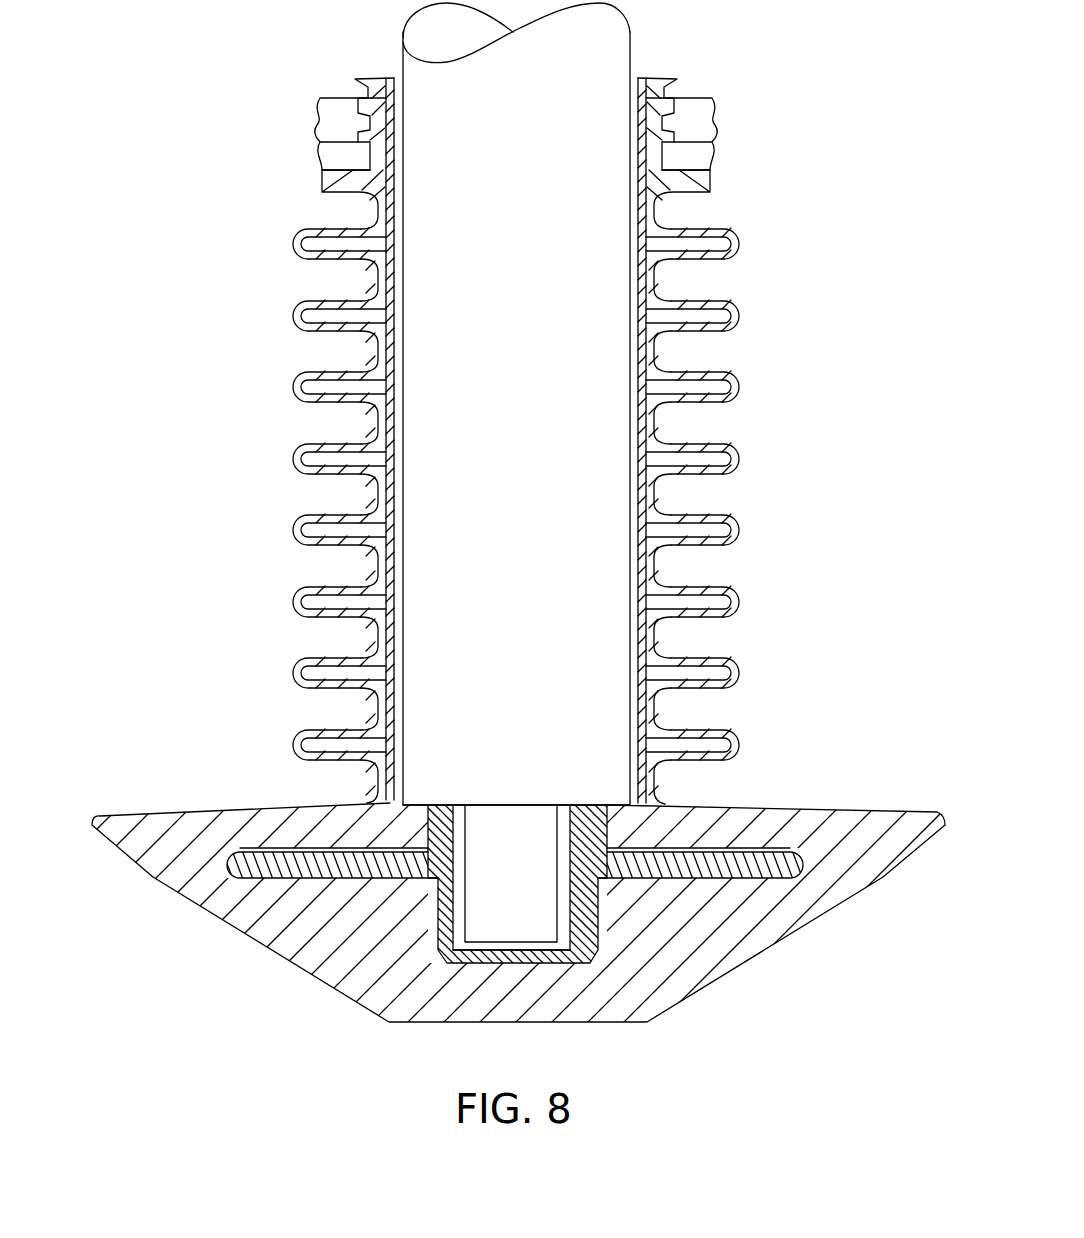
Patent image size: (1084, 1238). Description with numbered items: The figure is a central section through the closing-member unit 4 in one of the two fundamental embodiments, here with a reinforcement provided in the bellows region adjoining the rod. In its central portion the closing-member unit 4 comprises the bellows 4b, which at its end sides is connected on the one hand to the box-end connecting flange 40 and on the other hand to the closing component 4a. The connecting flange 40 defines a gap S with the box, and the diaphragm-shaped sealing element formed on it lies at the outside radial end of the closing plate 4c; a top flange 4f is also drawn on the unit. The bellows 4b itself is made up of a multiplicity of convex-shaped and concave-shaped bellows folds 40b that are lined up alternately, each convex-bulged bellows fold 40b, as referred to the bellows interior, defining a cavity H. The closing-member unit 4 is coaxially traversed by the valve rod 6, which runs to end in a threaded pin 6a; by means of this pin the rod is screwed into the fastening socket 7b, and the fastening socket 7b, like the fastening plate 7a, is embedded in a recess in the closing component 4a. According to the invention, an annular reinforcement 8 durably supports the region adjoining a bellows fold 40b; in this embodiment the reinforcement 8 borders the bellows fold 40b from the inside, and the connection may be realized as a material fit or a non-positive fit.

The closing-member unit 4 is at (565, 429).
The closing component 4a is at (850, 880).
The bellows 4b is at (378, 492).
The closing plate 4c is at (698, 181).
The top flange of sheath 4f is at (676, 88).
The valve rod 6 is at (420, 648).
The threaded pin 6a is at (492, 858).
The fastening plate 7a is at (790, 852).
The fastening socket 7b is at (587, 860).
The annular reinforcement 8 is at (660, 627).
The connecting flange 40 is at (738, 143).
The bellows fold 40b is at (736, 532).
The cavity H is at (725, 389).
The gap S is at (646, 702).